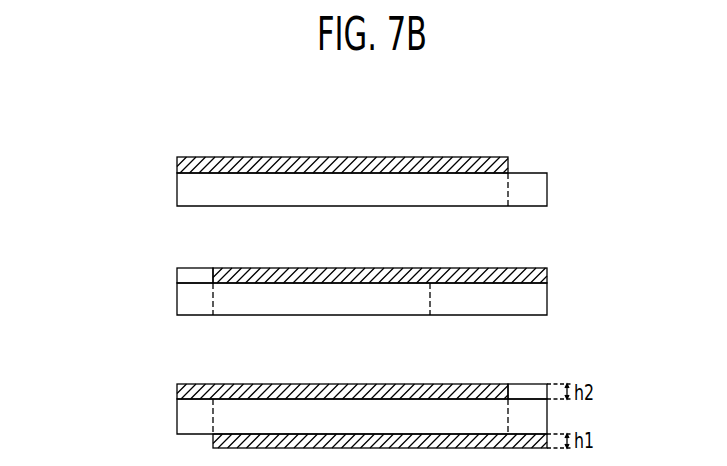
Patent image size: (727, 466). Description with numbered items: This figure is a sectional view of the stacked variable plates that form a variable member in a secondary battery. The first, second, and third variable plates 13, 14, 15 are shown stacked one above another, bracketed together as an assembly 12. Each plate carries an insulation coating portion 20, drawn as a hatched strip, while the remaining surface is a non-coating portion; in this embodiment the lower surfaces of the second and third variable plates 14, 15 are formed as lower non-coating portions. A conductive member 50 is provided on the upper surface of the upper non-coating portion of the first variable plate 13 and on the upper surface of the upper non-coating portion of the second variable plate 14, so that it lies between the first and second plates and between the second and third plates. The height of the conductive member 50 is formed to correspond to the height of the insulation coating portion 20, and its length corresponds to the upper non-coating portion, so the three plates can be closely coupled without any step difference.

The stacked body 12 is at (73, 170).
The first variable plate 13 is at (182, 412).
The second variable plate 14 is at (182, 296).
The third variable plate 15 is at (182, 185).
The insulation coating portion 20 is at (348, 272).
The conductive member 50 is at (187, 268).